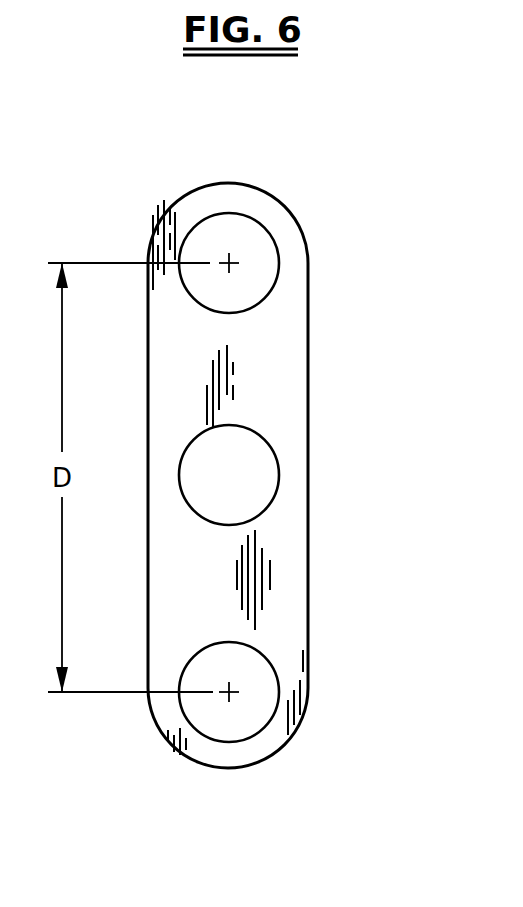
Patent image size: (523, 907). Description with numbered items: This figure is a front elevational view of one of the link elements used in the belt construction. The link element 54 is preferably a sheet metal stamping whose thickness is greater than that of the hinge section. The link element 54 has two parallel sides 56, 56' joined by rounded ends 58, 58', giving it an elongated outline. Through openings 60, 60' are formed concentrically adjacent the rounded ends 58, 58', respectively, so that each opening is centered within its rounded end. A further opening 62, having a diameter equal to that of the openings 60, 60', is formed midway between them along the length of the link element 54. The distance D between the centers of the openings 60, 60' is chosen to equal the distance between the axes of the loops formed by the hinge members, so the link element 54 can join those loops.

The link element 54 is at (261, 461).
The side 56 is at (381, 475).
The side 56' is at (108, 475).
The rounded end 58 is at (233, 198).
The rounded end 58' is at (237, 733).
The through opening 60 is at (304, 220).
The through opening 60' is at (310, 644).
The opening 62 is at (237, 470).